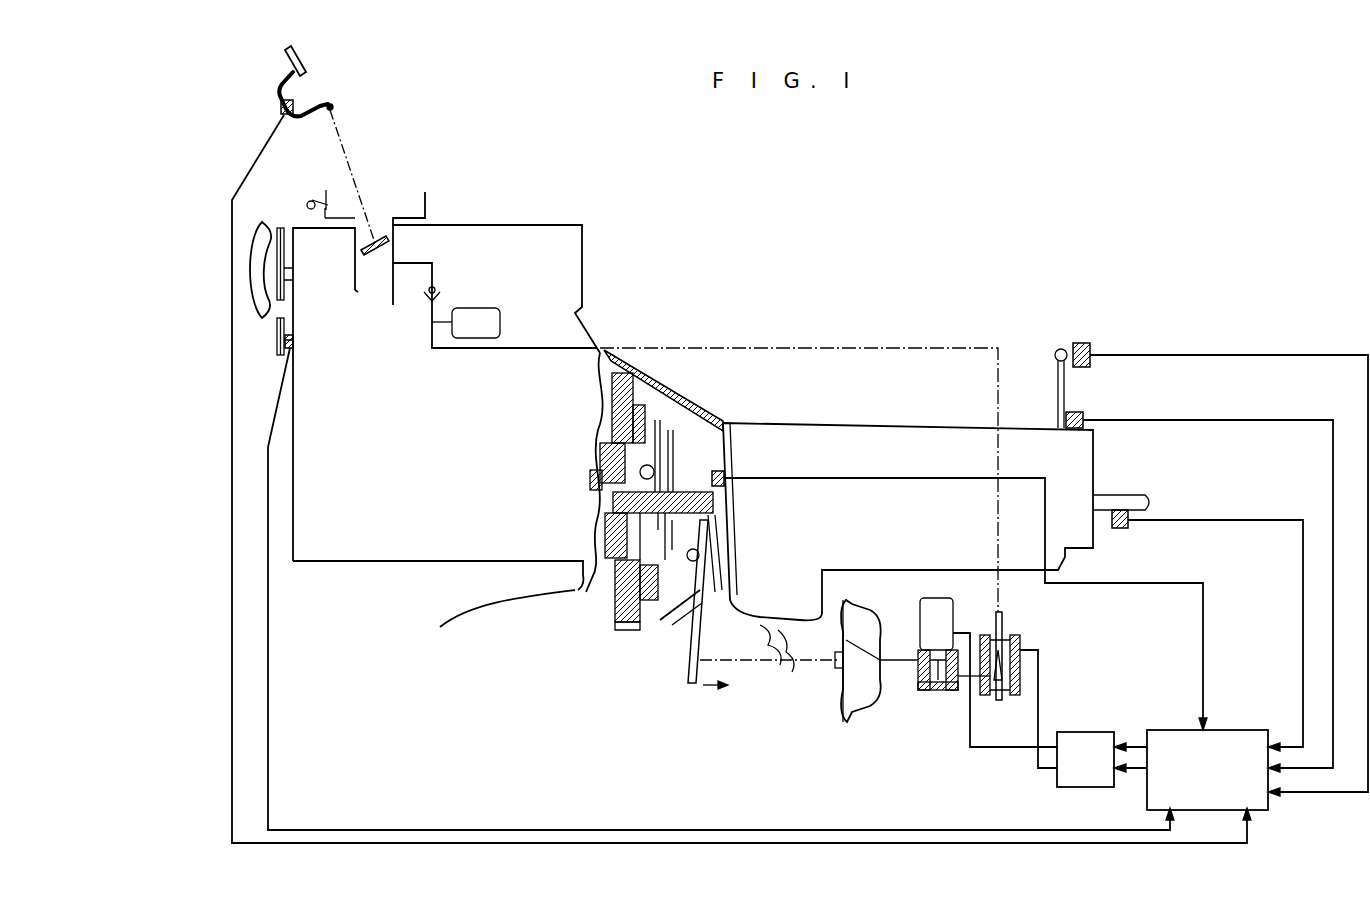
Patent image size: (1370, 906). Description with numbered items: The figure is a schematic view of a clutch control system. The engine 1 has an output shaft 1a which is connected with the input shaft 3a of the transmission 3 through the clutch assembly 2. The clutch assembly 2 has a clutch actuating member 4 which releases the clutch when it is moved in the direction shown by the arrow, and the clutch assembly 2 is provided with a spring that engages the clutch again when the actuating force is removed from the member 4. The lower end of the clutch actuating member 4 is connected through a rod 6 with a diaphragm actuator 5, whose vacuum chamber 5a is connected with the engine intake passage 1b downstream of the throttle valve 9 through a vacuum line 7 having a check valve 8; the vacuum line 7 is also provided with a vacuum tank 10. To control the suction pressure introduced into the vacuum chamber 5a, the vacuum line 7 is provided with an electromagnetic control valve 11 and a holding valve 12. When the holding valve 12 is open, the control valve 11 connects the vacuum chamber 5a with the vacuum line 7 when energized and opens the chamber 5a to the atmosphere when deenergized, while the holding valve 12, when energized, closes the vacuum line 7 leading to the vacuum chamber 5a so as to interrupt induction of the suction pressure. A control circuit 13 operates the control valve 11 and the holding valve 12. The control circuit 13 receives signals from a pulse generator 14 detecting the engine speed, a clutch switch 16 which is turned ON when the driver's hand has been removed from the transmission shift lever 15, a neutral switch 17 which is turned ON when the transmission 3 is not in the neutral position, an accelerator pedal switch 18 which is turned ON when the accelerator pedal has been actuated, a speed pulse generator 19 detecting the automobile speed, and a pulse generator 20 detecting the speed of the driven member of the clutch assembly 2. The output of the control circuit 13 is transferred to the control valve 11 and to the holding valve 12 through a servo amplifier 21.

The engine 1 is at (572, 262).
The output shaft 1a is at (590, 484).
The engine intake passage 1b is at (354, 292).
The clutch assembly 2 is at (598, 628).
The transmission 3 is at (828, 430).
The input shaft 3a is at (724, 522).
The clutch actuating member 4 is at (690, 650).
The diaphragm actuator 5 is at (856, 612).
The vacuum chamber 5a is at (870, 632).
The rod 6 is at (776, 676).
The vacuum line 7 is at (431, 348).
The check valve 8 is at (441, 296).
The throttle valve 9 is at (388, 244).
The vacuum tank 10 is at (488, 312).
The control valve 11 is at (1022, 640).
The holding valve 12 is at (930, 692).
The control circuit 13 is at (1242, 730).
The pulse generator 14 is at (294, 342).
The transmission shift lever 15 is at (1057, 390).
The clutch switch 16 is at (1080, 342).
The neutral switch 17 is at (1080, 410).
The accelerator pedal switch 18 is at (281, 107).
The speed pulse generator 19 is at (1120, 530).
The pulse generator 20 is at (725, 466).
The servo amplifier 21 is at (1088, 732).